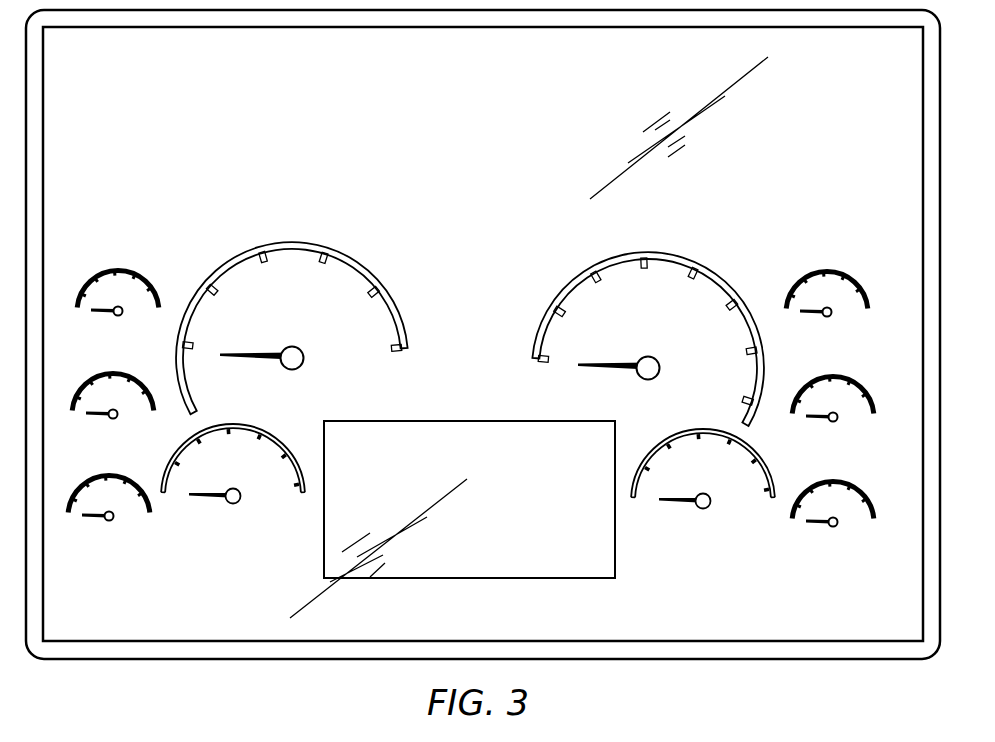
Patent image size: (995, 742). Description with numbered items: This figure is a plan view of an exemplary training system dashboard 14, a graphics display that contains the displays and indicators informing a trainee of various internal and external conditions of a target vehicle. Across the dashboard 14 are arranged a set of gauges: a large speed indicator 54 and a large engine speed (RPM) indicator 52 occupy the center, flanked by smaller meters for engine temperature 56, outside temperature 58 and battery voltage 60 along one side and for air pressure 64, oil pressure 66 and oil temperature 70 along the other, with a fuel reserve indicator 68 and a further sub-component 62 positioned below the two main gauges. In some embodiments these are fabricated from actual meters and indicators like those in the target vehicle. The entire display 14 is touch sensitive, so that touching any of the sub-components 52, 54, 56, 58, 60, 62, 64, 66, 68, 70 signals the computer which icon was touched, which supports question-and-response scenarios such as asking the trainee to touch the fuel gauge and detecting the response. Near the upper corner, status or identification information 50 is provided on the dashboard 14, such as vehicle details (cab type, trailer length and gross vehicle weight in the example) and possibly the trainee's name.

The training system dashboard 14 is at (458, 151).
The status or identification information 50 is at (280, 99).
The engine speed (RPM) indicator 52 is at (356, 258).
The speed indicator 54 is at (598, 268).
The engine temperature indicator 56 is at (138, 272).
The outside temperature indicator 58 is at (113, 375).
The battery voltage indicator 60 is at (110, 478).
The dashboard sub-component 62 is at (258, 427).
The air pressure indicator 64 is at (838, 272).
The oil pressure indicator 66 is at (848, 376).
The fuel reserve indicator 68 is at (686, 434).
The oil temperature indicator 70 is at (848, 482).